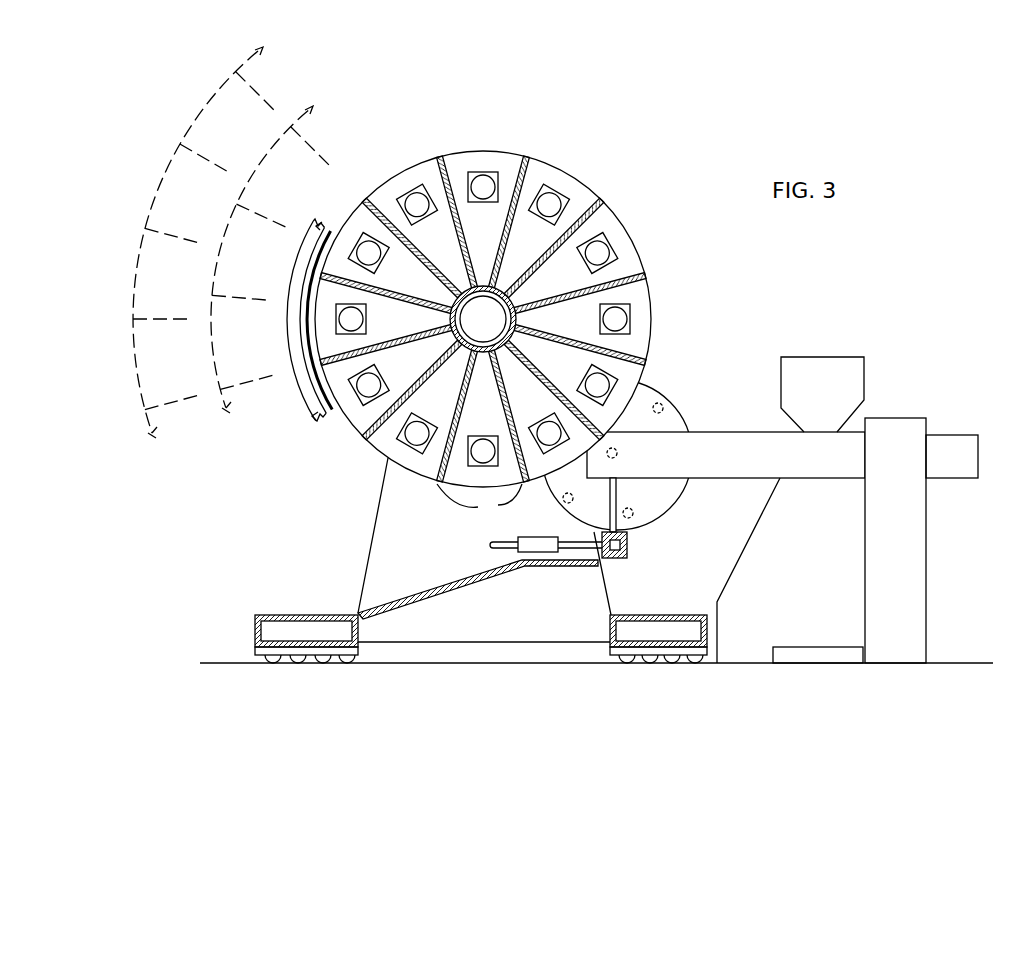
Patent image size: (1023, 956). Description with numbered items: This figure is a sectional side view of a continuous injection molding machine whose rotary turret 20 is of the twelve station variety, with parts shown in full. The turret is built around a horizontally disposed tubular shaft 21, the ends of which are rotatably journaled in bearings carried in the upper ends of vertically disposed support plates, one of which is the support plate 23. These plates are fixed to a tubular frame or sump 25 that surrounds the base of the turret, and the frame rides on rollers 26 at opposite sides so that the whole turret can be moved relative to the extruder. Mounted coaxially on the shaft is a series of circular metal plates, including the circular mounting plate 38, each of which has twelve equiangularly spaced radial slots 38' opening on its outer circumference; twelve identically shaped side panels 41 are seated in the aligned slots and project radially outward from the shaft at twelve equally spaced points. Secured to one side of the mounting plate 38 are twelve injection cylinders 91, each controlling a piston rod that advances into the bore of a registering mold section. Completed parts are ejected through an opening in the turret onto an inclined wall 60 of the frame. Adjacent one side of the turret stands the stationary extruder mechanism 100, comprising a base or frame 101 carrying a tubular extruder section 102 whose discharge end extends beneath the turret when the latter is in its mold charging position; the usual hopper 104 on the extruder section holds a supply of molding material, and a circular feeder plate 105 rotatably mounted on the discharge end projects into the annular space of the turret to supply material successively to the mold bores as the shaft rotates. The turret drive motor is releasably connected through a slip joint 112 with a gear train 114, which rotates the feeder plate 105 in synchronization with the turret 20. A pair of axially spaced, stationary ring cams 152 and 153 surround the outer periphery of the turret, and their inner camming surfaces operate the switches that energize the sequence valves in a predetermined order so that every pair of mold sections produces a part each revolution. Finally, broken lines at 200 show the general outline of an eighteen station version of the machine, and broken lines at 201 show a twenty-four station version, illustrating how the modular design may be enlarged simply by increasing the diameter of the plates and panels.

The rotary turret 20 is at (645, 106).
The tubular shaft 21 is at (504, 322).
The support plate 23 is at (370, 545).
The tubular frame or sump 25 is at (292, 612).
The rollers 26 is at (346, 665).
The circular mounting plate 38 is at (509, 319).
The radial slots 38' is at (507, 304).
The side panels 41 is at (425, 150).
The inclined wall 60 is at (430, 590).
The injection cylinders 91 is at (478, 208).
The extruder mechanism 100 is at (774, 484).
The base or frame 101 is at (926, 577).
The tubular extruder section 102 is at (960, 435).
The hopper 104 is at (825, 357).
The circular feeder plate 105 is at (688, 415).
The slip joint 112 is at (518, 538).
The gear train 114 is at (637, 566).
The ring cam 152 is at (310, 422).
The ring cam 153 is at (289, 334).
The eighteen station machine outline 200 is at (226, 410).
The twenty-four station machine outline 201 is at (150, 432).